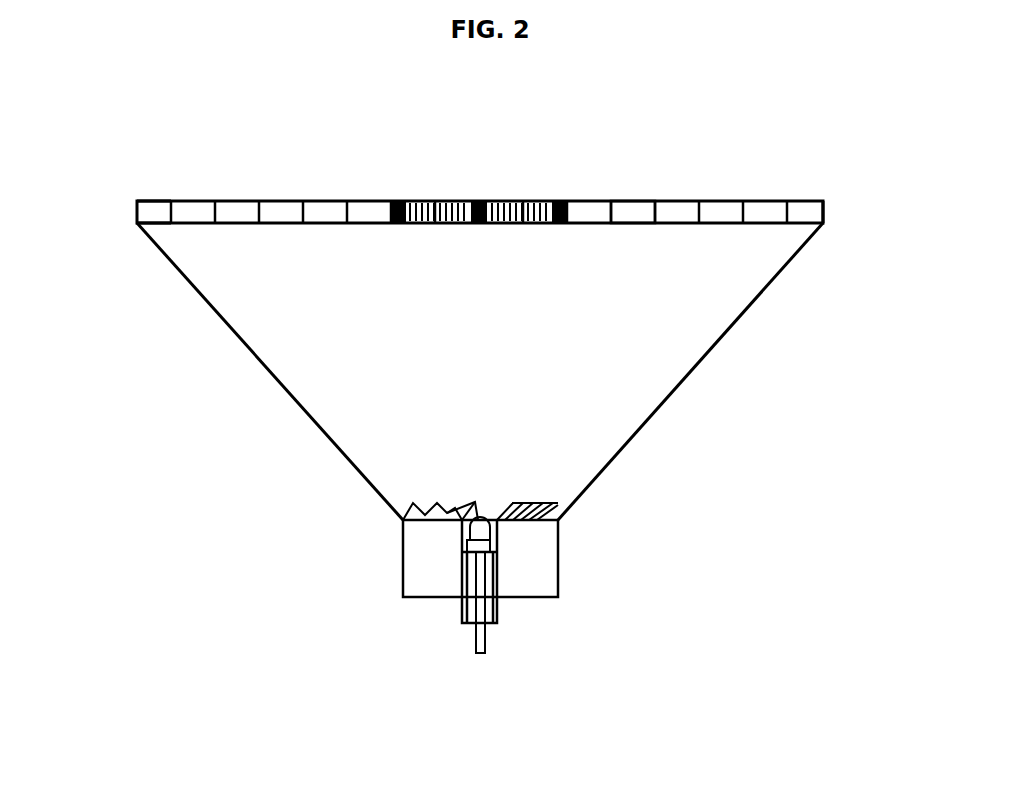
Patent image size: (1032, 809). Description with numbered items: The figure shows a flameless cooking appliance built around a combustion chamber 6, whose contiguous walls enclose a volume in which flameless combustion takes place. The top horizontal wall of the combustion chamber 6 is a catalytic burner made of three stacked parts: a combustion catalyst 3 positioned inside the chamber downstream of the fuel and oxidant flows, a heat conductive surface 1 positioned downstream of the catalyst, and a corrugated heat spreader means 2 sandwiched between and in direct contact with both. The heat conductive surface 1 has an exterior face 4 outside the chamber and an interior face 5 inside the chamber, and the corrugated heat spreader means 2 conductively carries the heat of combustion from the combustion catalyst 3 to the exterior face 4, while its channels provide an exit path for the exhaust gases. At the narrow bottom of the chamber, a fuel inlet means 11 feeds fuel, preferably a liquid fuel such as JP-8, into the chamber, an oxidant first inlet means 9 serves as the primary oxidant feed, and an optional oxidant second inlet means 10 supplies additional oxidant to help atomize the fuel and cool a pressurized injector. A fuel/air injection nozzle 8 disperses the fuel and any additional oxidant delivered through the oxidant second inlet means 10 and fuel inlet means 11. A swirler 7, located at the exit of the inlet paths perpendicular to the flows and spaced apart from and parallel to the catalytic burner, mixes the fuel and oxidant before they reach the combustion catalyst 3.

The heat conductive surface 1 is at (820, 199).
The corrugated heat spreader means 2 is at (620, 210).
The combustion catalyst 3 is at (822, 223).
The exterior face 4 is at (140, 199).
The interior face 5 is at (140, 212).
The combustion chamber 6 is at (553, 410).
The swirler 7 is at (557, 503).
The fuel/air injection nozzle 8 is at (482, 530).
The oxidant first inlet means 9 is at (530, 588).
The oxidant second inlet means 10 is at (493, 597).
The fuel inlet means 11 is at (487, 653).